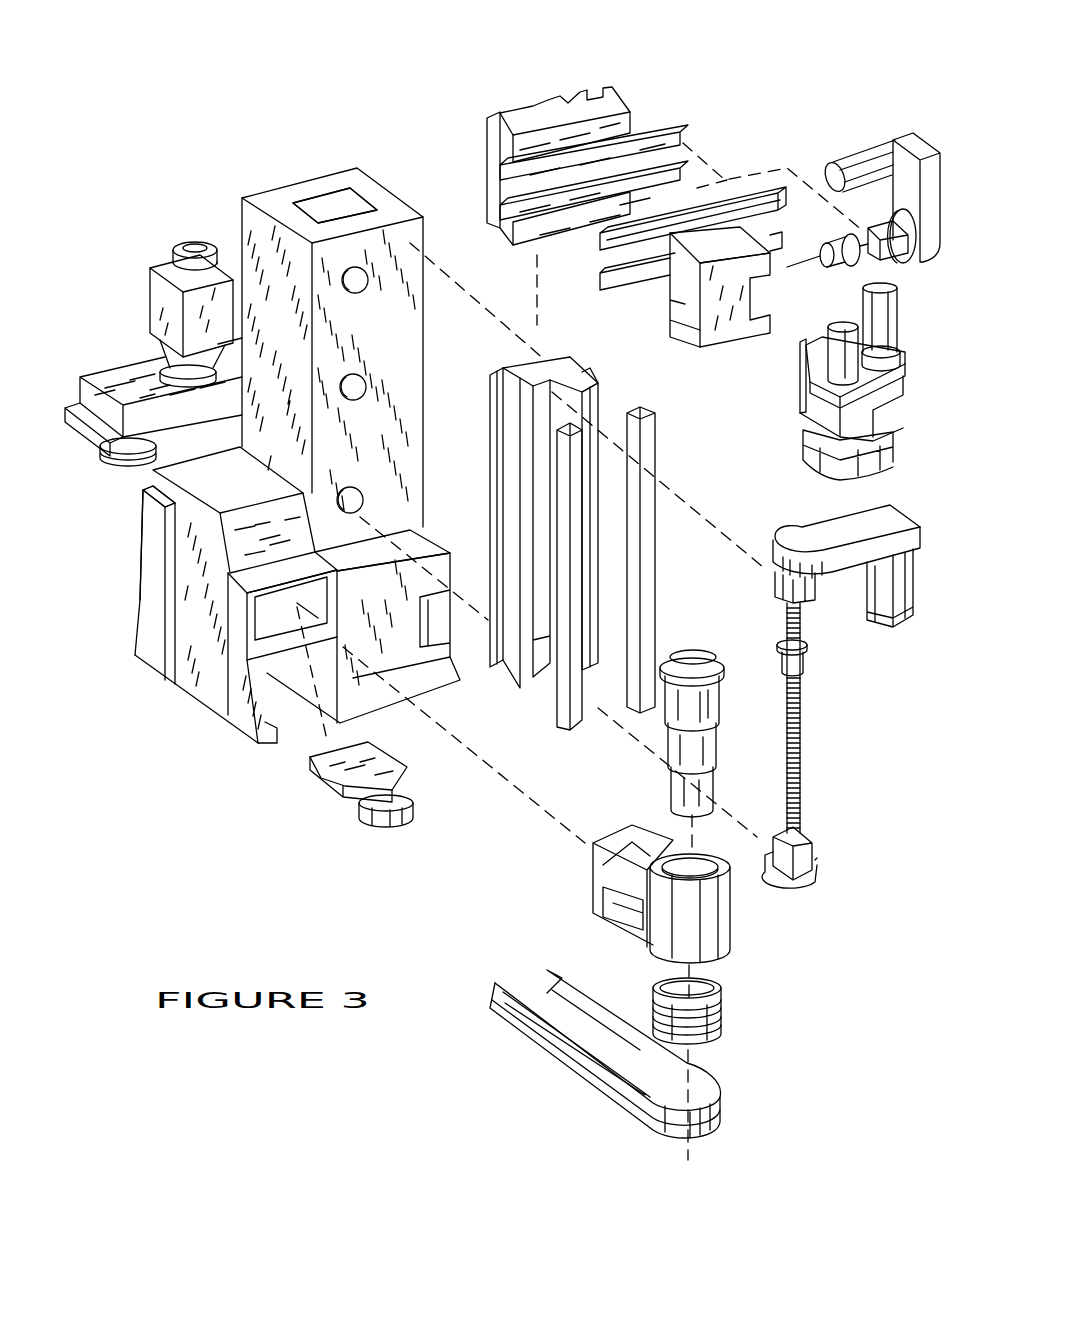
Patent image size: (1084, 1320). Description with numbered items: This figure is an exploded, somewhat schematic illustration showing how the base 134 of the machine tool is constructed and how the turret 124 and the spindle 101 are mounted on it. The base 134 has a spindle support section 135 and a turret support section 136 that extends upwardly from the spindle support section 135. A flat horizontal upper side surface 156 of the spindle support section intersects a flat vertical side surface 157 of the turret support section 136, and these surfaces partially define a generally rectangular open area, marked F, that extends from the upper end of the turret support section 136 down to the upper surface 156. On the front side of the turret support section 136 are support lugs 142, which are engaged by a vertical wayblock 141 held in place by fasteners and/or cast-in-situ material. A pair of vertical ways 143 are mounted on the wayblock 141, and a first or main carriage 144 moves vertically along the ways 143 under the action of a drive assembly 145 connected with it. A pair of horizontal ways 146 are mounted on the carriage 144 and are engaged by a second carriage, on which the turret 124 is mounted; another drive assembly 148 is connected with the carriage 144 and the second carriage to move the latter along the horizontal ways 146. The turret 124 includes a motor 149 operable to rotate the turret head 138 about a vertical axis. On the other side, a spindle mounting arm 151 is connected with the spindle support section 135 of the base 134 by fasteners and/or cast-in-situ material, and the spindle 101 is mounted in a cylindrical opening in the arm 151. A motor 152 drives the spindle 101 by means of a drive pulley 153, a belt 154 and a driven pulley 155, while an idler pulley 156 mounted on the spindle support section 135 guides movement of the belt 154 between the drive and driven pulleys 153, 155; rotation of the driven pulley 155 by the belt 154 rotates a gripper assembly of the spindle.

The spindle 101 is at (693, 652).
The turret 124 is at (905, 387).
The base 134 is at (210, 715).
The spindle support section 135 is at (180, 650).
The turret support section 136 is at (403, 367).
The turret head 138 is at (882, 463).
The vertical wayblock 141 is at (563, 367).
The support lugs 142 is at (353, 288).
The vertical ways 143 is at (650, 437).
The main carriage 144 is at (623, 122).
The drive assembly 145 is at (817, 538).
The horizontal ways 146 is at (603, 290).
The drive assembly 148 is at (920, 140).
The motor 149 is at (883, 323).
The spindle mounting arm 151 is at (703, 928).
The motor 152 is at (157, 313).
The drive pulley 153 is at (123, 467).
The belt 154 is at (562, 995).
The driven pulley 155 is at (717, 1027).
The idler pulley 156 is at (155, 495).
The flat vertical side surface 157 is at (252, 223).